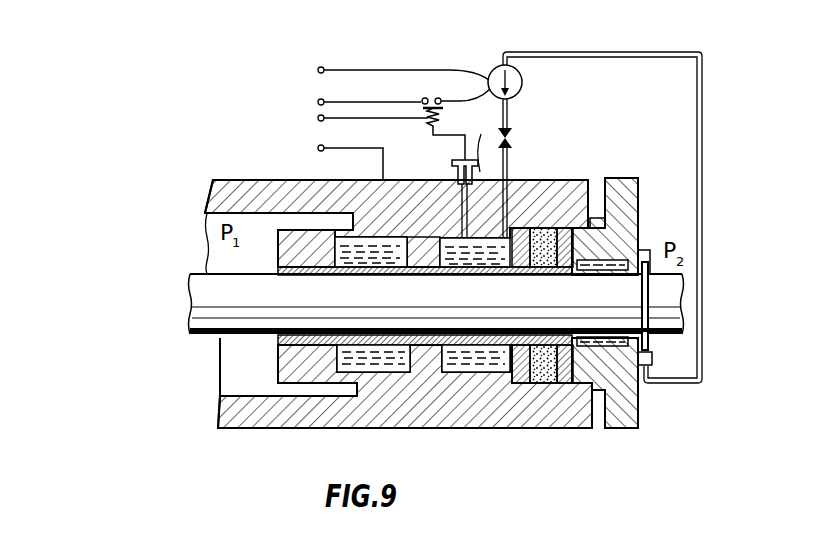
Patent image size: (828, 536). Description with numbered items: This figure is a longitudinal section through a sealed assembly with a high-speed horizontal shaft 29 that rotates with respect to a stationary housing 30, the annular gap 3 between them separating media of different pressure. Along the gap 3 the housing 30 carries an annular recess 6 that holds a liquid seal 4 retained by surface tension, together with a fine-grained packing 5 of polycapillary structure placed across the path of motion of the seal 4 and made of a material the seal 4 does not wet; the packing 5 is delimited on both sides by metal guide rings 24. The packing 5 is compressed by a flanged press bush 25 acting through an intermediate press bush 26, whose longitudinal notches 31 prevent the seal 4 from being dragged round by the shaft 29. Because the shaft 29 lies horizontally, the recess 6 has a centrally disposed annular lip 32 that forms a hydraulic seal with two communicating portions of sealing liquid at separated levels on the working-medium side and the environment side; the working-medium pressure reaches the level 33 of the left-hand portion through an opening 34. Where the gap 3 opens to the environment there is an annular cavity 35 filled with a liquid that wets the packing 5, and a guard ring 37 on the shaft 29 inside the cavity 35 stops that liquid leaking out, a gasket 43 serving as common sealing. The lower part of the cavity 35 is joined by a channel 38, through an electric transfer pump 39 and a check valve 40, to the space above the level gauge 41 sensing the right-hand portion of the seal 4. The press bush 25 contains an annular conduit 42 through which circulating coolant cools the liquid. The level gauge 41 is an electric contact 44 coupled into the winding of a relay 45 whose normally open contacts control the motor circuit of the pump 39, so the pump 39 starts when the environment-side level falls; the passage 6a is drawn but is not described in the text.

The annular gap 3 is at (278, 266).
The liquid seal 4 is at (415, 353).
The fine-grained packing 5 is at (534, 384).
The recess 6 is at (548, 226).
The passage 6a is at (278, 388).
The metal guide rings 24 is at (278, 345).
The flanged press bush 25 is at (622, 428).
The intermediate press bush 26 is at (382, 238).
The shaft 29 is at (207, 335).
The housing 30 is at (238, 426).
The longitudinal notches 31 is at (360, 372).
The annular lip 32 is at (424, 250).
The level 33 is at (388, 262).
The opening 34 is at (347, 224).
The annular cavity 35 is at (648, 252).
The guard ring 37 is at (649, 332).
The channel 38 is at (702, 210).
The electric transfer pump 39 is at (515, 54).
The check valve 40 is at (512, 132).
The level gauge 41 is at (478, 247).
The annular conduit 42 is at (629, 422).
The gasket 43 is at (594, 218).
The electric contact 44 is at (486, 142).
The relay 45 is at (432, 100).